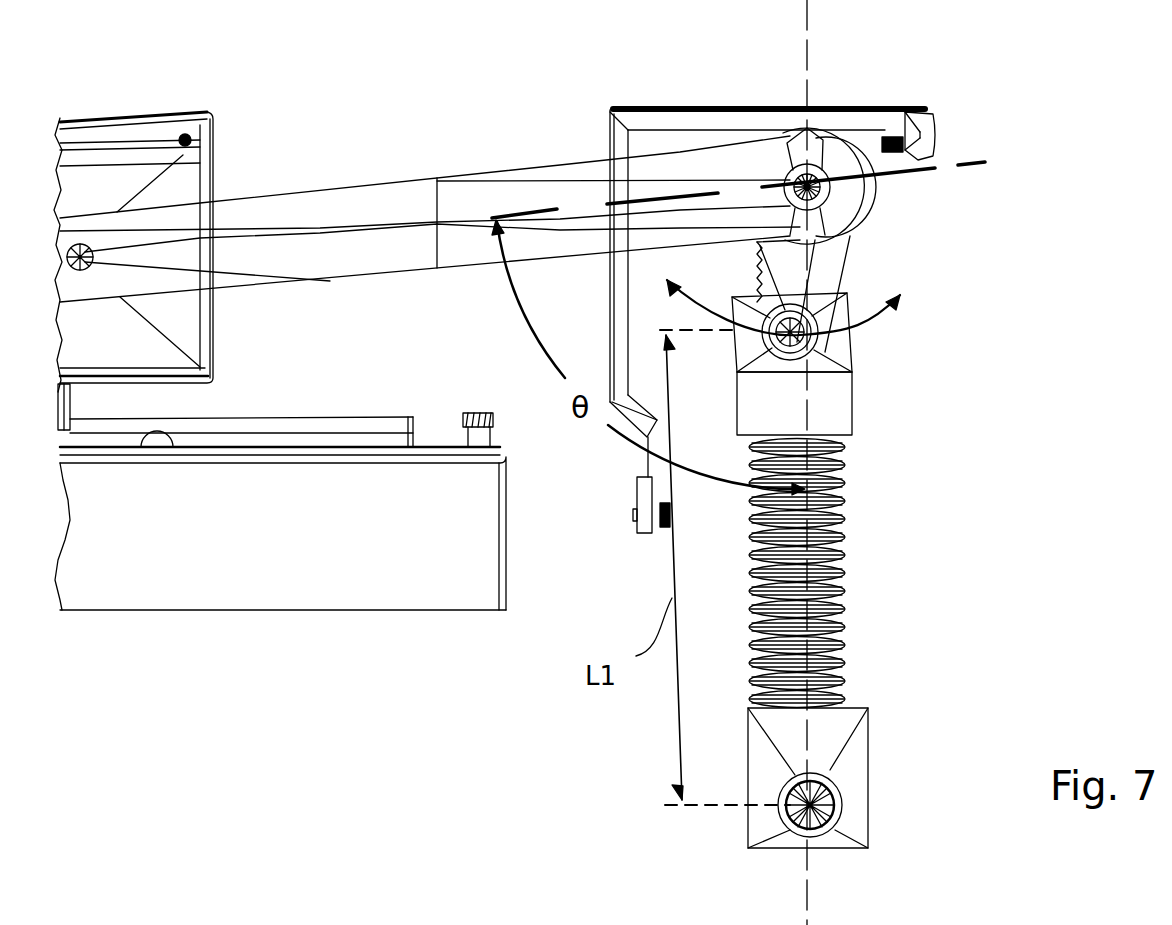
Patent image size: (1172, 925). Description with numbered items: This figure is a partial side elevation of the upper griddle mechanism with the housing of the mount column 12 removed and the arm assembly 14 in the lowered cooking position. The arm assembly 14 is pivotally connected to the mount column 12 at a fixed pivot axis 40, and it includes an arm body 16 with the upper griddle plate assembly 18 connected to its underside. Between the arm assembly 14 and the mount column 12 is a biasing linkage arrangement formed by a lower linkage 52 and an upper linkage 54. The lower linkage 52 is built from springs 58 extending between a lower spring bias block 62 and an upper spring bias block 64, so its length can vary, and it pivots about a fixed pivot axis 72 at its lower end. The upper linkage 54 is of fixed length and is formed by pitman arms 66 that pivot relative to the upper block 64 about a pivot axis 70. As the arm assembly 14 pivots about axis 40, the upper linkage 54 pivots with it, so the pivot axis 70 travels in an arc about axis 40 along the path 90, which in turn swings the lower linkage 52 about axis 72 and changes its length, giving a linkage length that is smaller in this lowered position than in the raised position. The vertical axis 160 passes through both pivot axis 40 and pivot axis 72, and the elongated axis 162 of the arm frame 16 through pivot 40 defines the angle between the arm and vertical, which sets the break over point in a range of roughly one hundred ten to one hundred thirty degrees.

The mount column 12 is at (886, 105).
The arm assembly 14 is at (515, 172).
The arm body 16 is at (276, 212).
The upper griddle plate assembly 18 is at (413, 585).
The pivot axis 40 is at (820, 186).
The lower linkage 52 is at (871, 570).
The upper linkage 54 is at (887, 285).
The spring 58 is at (845, 528).
The lower spring bias block 62 is at (845, 722).
The upper spring bias block 64 is at (840, 416).
The pitman arm 66 is at (820, 262).
The pivot axis 70 is at (826, 330).
The pivot axis 72 is at (838, 800).
The path 90 is at (708, 313).
The axis 160 is at (810, 14).
The elongated axis 162 is at (673, 197).